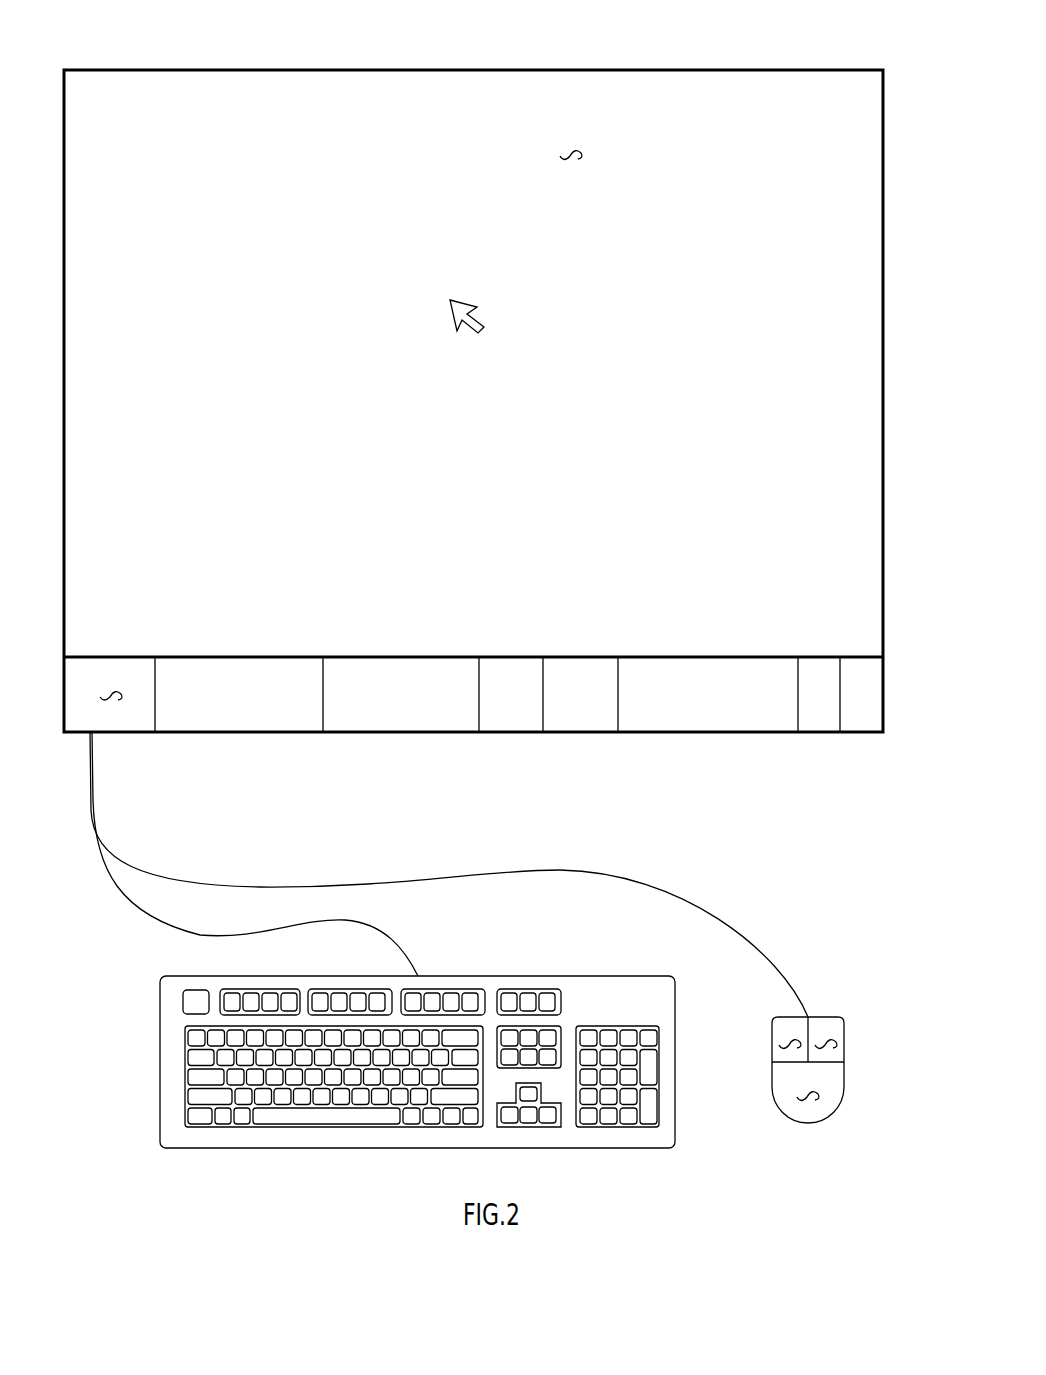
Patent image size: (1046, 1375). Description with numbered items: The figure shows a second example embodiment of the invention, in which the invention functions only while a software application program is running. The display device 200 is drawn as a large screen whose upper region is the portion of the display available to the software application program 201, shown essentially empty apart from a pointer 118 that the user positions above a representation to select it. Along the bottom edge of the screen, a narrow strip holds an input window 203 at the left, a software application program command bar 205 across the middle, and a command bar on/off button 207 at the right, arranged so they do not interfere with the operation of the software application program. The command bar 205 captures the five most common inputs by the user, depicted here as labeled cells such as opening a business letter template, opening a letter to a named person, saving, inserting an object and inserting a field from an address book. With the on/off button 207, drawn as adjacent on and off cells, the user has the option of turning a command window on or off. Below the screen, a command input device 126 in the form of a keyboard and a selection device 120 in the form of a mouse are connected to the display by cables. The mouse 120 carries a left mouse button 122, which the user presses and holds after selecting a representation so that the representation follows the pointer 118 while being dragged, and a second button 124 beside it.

The display screen 200 is at (246, 68).
The pointer 118 is at (459, 296).
The portion of the display available to the software application program 201 is at (566, 136).
The input window 203 is at (114, 699).
The software application program command bar 205 is at (157, 740).
The command bar on/off button 207 is at (885, 740).
The command input device 126 is at (546, 974).
The selection device 120 is at (811, 1101).
The mouse button 122 is at (786, 1031).
The right mouse button 124 is at (831, 1031).